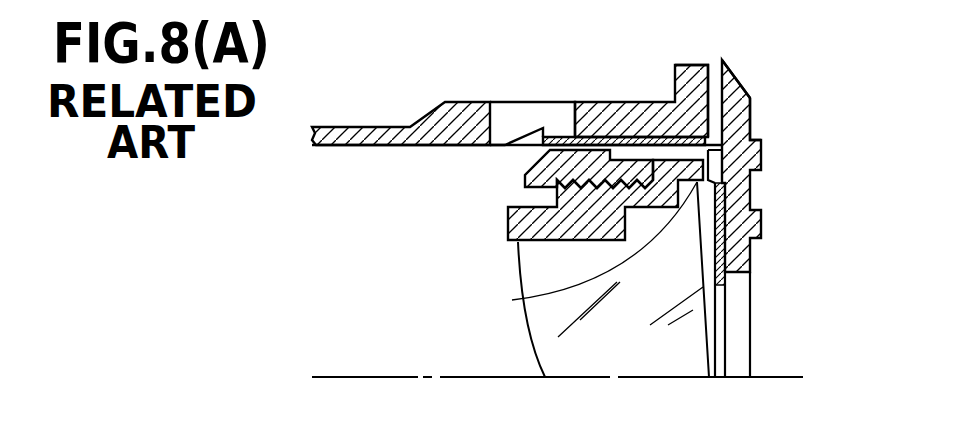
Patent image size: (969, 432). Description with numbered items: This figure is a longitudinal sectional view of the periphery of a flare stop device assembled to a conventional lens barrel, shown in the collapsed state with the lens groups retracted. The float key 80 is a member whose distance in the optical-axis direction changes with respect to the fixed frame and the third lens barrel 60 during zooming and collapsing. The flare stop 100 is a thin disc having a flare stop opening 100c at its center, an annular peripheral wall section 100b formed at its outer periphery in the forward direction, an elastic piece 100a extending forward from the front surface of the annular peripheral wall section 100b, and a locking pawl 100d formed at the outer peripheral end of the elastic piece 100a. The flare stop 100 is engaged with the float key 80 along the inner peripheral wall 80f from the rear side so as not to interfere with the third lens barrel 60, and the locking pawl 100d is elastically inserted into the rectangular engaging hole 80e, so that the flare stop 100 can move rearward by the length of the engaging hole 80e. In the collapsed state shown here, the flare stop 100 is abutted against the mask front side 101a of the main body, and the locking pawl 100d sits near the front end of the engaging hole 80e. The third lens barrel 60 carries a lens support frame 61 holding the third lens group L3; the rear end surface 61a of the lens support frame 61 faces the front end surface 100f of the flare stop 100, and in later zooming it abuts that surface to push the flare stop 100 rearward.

The float key 80 is at (447, 108).
The rectangular engaging hole 80e is at (514, 122).
The inner peripheral wall 80f is at (658, 128).
The flare stop 100 is at (735, 217).
The elastic piece 100a is at (630, 120).
The annular peripheral wall section 100b is at (747, 128).
The flare stop opening 100c is at (720, 283).
The locking pawl 100d is at (548, 150).
The front end surface 100f is at (712, 152).
The mask front side 101a is at (732, 90).
The third lens barrel 60 is at (525, 188).
The lens support frame 61 is at (508, 243).
The rear end surface 61a is at (530, 298).
The third lens group L3 is at (560, 352).